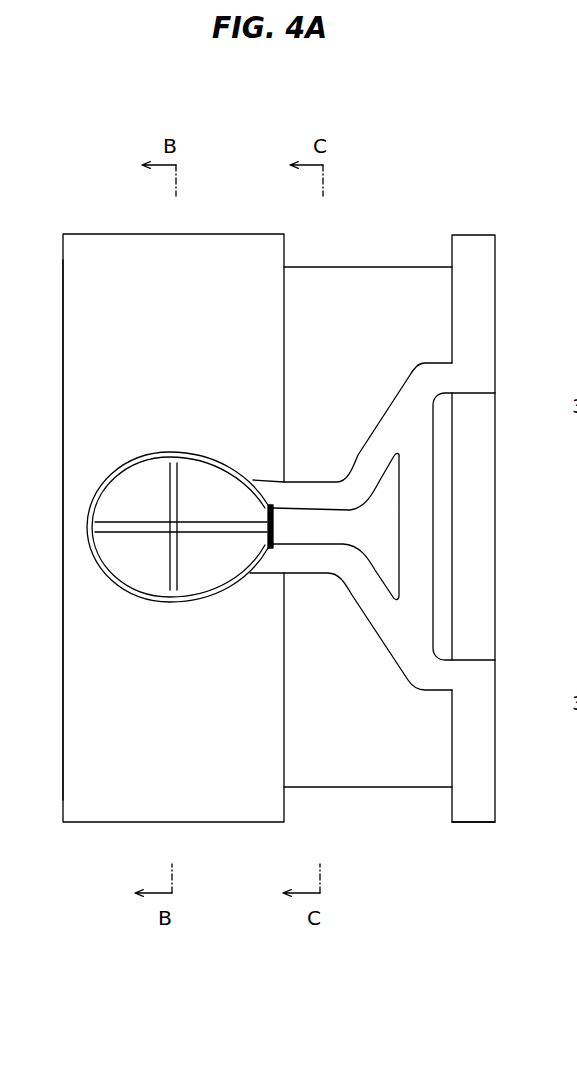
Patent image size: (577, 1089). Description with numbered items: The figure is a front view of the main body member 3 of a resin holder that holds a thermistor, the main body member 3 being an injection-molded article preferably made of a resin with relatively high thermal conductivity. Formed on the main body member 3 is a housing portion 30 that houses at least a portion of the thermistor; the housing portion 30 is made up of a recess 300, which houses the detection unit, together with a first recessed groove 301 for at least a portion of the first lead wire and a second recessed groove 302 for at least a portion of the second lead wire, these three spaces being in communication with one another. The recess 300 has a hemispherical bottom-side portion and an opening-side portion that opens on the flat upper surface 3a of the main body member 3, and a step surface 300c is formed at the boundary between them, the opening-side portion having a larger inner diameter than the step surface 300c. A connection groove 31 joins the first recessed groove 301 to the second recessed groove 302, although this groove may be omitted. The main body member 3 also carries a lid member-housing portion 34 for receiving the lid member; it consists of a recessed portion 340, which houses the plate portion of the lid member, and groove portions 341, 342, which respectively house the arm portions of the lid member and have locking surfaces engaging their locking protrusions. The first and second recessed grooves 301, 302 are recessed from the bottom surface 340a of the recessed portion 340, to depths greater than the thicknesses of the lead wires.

The main body member 3 is at (148, 500).
The flat upper surface 3a is at (75, 308).
The housing portion 30 is at (269, 514).
The recess 300 is at (180, 491).
The step surface 300c is at (213, 477).
The first recessed groove 301 is at (304, 539).
The second recessed groove 302 is at (309, 473).
The connection groove 31 is at (436, 508).
The lid member-housing portion 34 is at (427, 531).
The recessed portion 340 is at (435, 741).
The bottom surface 340a is at (434, 331).
The groove portion 341 is at (413, 826).
The groove portion 342 is at (426, 244).